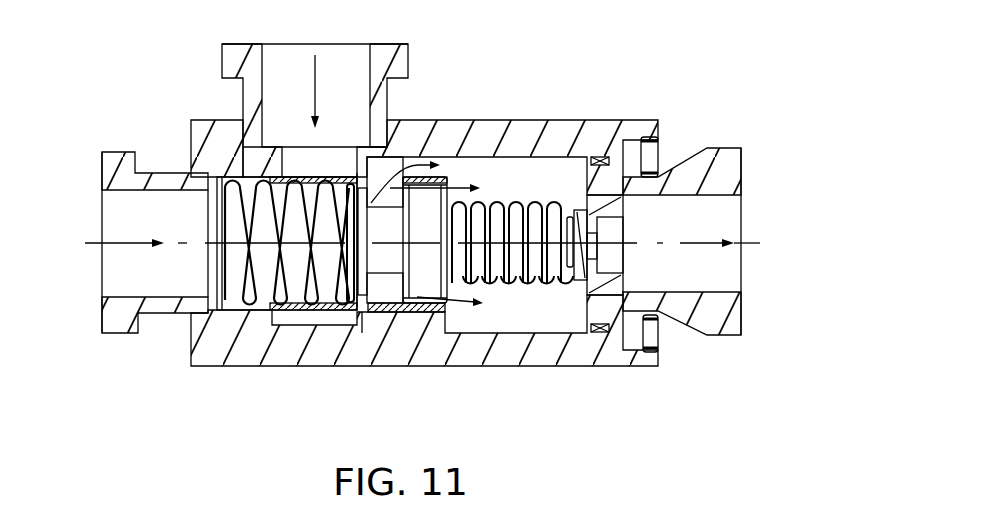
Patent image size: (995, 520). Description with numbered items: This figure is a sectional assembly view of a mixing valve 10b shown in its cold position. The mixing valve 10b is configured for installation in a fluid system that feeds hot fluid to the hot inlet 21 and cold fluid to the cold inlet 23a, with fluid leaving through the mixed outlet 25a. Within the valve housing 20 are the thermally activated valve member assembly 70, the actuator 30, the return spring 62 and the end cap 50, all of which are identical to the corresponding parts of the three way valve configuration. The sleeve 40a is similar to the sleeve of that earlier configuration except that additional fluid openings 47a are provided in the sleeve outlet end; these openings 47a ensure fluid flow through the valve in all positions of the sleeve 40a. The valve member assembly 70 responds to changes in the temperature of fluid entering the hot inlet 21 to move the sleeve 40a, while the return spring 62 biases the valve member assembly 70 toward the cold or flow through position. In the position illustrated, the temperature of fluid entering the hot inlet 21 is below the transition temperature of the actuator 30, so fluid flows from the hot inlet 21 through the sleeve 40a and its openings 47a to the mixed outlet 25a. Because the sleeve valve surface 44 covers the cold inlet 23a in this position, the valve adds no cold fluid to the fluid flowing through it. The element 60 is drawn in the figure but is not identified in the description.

The mixing valve 10b is at (186, 92).
The valve housing 20 is at (545, 372).
The hot inlet 21 is at (116, 338).
The cold inlet 23a is at (222, 58).
The mixed outlet 25a is at (730, 336).
The actuator 30 is at (392, 240).
The sleeve 40a is at (293, 310).
The sleeve valve surface 44 is at (334, 150).
The fluid openings 47a is at (450, 188).
The end cap 50 is at (679, 317).
The end plate 60 is at (531, 283).
The return spring 62 is at (243, 305).
The valve member assembly 70 is at (528, 190).